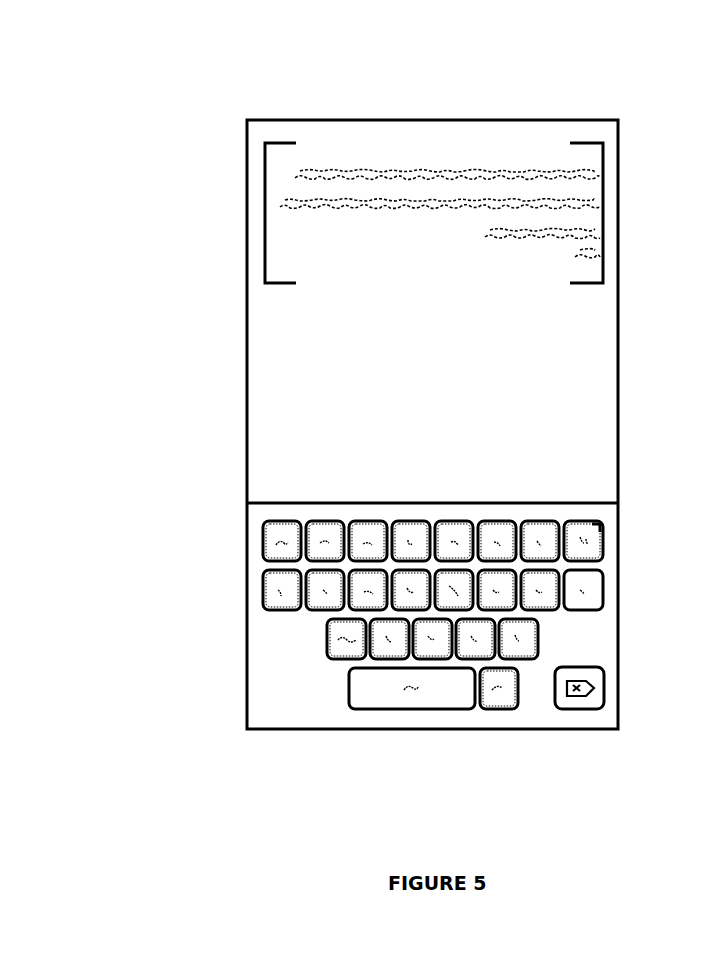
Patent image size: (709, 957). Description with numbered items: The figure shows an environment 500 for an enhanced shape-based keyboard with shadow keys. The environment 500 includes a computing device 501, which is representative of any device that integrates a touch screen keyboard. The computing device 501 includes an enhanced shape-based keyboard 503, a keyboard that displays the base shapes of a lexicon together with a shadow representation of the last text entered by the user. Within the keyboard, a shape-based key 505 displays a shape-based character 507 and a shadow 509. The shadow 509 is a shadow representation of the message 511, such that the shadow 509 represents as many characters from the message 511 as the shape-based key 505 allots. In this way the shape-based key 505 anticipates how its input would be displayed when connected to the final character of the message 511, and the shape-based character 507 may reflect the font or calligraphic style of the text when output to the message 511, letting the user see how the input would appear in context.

The environment 500 is at (50, 75).
The computing device 501 is at (247, 122).
The enhanced shape-based keyboard 503 is at (433, 622).
The shape-based key 505 is at (583, 521).
The shape-based character 507 is at (582, 546).
The shadow 509 is at (597, 532).
The message 511 is at (265, 213).